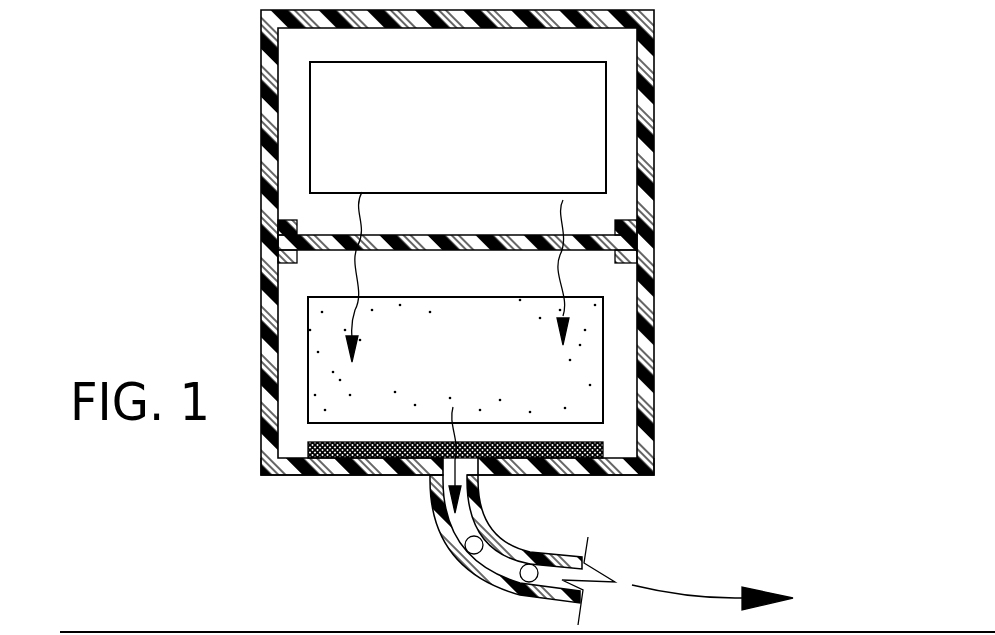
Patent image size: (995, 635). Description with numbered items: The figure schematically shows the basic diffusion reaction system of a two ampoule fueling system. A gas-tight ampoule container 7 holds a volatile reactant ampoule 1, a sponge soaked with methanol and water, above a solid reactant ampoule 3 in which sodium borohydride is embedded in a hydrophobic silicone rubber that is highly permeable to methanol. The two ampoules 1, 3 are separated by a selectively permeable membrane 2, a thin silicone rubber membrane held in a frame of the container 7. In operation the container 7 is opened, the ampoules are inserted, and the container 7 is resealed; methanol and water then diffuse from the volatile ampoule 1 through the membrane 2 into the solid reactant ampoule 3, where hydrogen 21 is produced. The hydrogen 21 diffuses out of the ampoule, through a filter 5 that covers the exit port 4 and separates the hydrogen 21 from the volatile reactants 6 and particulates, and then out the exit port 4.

The volatile reactant ampoule 1 is at (583, 108).
The selectively permeable membrane 2 is at (572, 236).
The solid reactant ampoule 3 is at (577, 336).
The exit port 4 is at (592, 570).
The filter 5 is at (268, 475).
The volatile reactants 6 is at (350, 270).
The ampoule container 7 is at (262, 90).
The hydrogen 21 is at (866, 585).